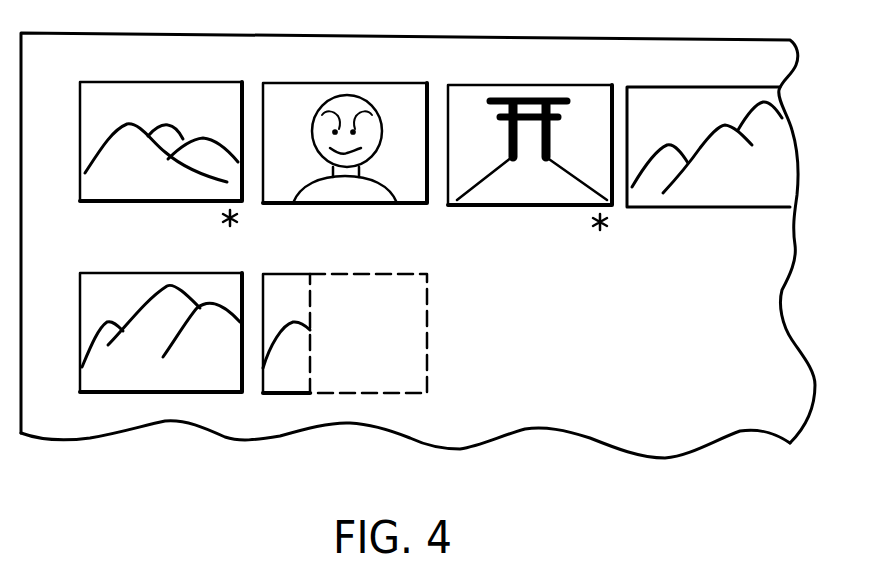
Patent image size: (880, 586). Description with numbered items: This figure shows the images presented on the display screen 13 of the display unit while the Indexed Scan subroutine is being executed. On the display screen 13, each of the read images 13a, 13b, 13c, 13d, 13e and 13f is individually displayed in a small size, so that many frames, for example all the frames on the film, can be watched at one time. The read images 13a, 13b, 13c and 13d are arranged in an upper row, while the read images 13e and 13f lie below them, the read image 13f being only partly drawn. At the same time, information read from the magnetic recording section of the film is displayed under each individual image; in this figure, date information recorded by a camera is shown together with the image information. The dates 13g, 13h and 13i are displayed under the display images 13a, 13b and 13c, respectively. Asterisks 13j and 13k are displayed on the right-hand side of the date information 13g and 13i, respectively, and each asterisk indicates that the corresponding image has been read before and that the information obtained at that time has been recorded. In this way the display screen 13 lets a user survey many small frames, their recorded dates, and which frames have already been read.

The display screen 13 is at (74, 44).
The read image 13a is at (97, 92).
The read image 13b is at (288, 91).
The read image 13c is at (562, 93).
The read image 13d is at (652, 94).
The read image 13e is at (207, 386).
The read image 13f is at (290, 383).
The date 13g is at (95, 229).
The date 13h is at (363, 231).
The date 13i is at (544, 232).
The asterisk 13j is at (233, 227).
The asterisk 13k is at (603, 232).